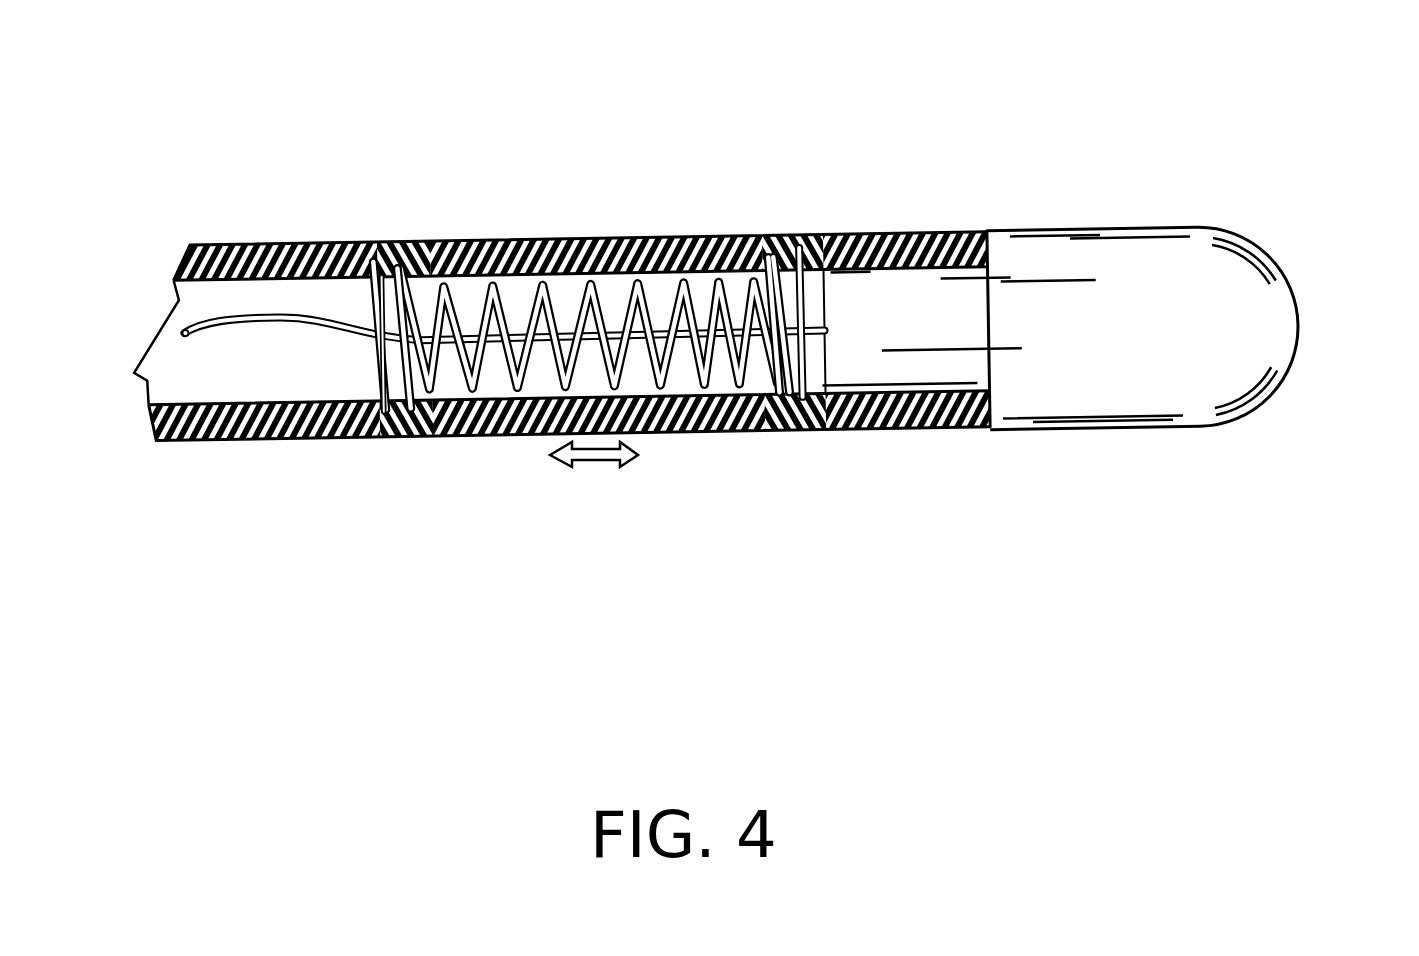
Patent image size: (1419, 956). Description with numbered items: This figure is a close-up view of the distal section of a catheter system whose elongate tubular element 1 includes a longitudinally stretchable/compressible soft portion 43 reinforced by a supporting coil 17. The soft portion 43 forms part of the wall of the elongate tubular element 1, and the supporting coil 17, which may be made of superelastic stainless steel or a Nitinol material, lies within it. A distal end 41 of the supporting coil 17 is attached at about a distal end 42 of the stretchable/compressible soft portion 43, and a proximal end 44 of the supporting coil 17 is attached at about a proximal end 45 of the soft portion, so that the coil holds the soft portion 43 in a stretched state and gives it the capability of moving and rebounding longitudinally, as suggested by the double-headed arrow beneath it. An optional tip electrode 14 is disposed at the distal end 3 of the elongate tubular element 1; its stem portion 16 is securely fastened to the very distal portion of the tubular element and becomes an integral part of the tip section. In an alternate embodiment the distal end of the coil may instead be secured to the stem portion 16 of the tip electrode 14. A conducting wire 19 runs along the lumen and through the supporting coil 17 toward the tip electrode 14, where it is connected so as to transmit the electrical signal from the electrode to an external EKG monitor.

The elongate tubular element 1 is at (283, 225).
The distal end 3 is at (983, 225).
The tip electrode 14 is at (1280, 258).
The stem portion 16 is at (900, 370).
The supporting coil 17 is at (600, 287).
The conducting wire 19 is at (287, 340).
The distal end of supporting coil 41 is at (803, 237).
The distal end of soft portion 42 is at (758, 232).
The stretchable/compressible soft portion 43 is at (760, 458).
The proximal end of supporting coil 44 is at (372, 242).
The proximal end of soft portion 45 is at (427, 232).